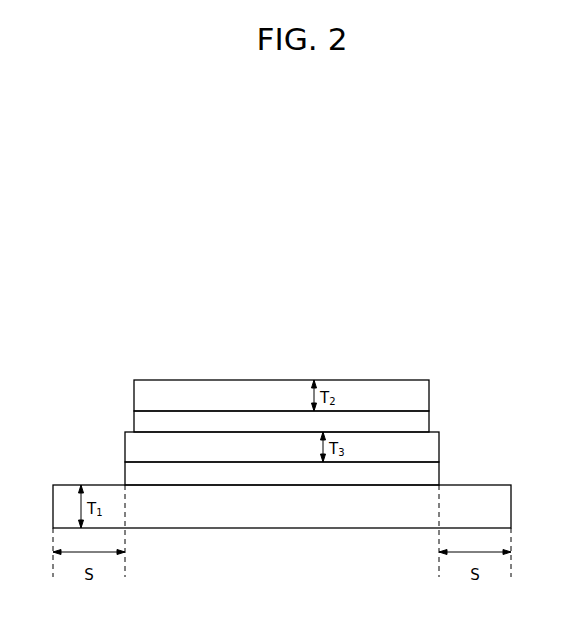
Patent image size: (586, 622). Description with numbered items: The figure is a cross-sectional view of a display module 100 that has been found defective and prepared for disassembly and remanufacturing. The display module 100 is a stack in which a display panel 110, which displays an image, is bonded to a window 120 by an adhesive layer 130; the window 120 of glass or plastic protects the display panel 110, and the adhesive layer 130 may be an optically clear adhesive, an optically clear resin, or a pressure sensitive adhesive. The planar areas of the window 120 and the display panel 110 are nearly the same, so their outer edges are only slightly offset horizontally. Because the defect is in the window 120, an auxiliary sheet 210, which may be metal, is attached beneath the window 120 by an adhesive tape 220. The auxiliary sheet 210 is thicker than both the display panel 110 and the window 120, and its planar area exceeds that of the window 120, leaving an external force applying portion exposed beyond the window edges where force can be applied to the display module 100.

The display module 100 is at (308, 391).
The display panel 110 is at (297, 397).
The window 120 is at (192, 453).
The adhesive layer 130 is at (244, 427).
The auxiliary sheet 210 is at (397, 512).
The adhesive tape 220 is at (292, 473).